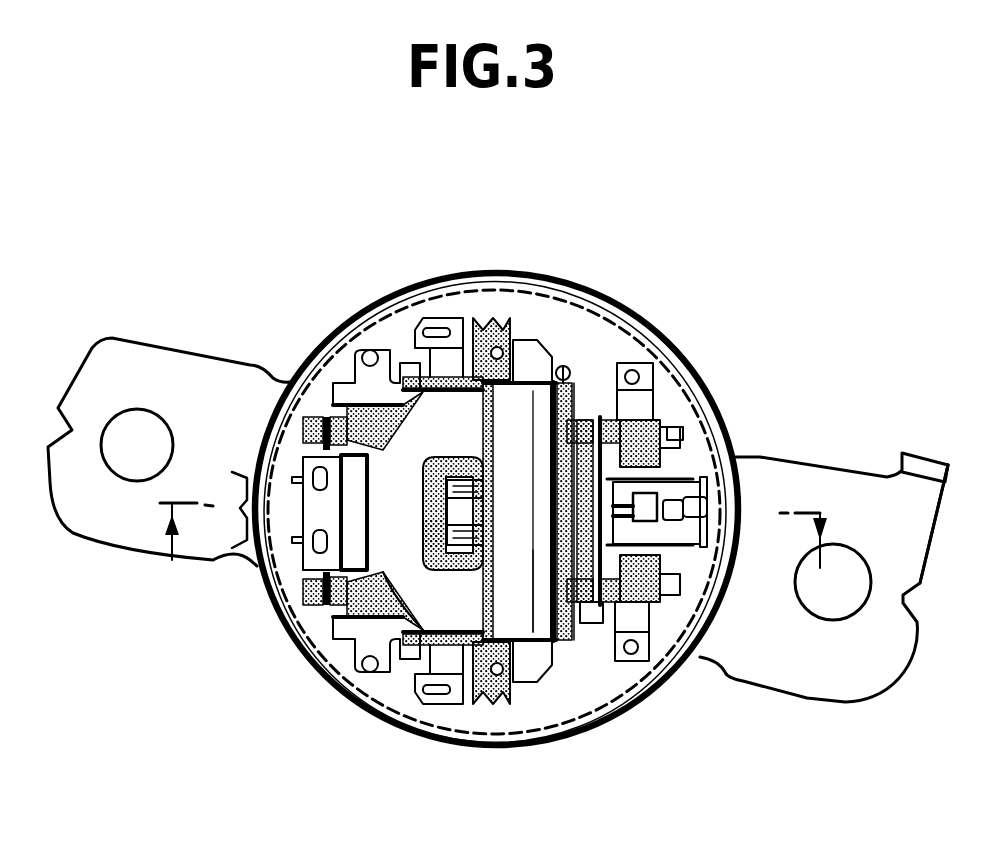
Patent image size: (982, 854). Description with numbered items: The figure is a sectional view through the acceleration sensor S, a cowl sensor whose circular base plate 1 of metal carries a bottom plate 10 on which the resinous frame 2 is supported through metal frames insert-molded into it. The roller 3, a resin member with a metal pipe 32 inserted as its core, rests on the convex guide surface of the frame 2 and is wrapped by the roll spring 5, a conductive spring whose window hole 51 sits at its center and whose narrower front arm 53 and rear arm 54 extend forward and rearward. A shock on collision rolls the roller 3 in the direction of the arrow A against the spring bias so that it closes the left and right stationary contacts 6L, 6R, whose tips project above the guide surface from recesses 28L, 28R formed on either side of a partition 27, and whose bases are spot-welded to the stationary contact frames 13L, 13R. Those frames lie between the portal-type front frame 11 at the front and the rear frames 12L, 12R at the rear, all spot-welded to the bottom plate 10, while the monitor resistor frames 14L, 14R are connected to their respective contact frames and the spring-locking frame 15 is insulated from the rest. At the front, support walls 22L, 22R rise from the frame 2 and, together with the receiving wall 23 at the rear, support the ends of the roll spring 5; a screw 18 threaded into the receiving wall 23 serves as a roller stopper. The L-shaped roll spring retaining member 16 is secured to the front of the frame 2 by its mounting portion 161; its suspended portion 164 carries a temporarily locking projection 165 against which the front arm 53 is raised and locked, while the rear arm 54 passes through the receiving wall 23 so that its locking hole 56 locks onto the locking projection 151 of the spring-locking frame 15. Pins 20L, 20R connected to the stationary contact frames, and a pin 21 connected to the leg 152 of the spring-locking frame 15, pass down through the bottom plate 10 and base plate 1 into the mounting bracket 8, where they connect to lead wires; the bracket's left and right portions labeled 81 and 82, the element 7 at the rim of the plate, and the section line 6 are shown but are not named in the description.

The circular base plate 1 is at (473, 278).
The resinous frame 2 is at (553, 652).
The roller 3 is at (480, 411).
The roll spring 5 is at (408, 647).
The section line VI-VI 6 is at (513, 561).
The dashed ring / gasket 7 is at (600, 313).
The mounting bracket 8 is at (808, 452).
The left mounting arm 81 is at (202, 365).
The arm edge 82 is at (917, 543).
The bottom plate 10 is at (385, 333).
The front frame 11 is at (357, 674).
The right rear frame 12R is at (640, 377).
The left rear frame 12L is at (647, 657).
The right stationary contact frame 13R is at (528, 340).
The left stationary contact frame 13L is at (523, 684).
The right monitor resistor frame 14R is at (430, 320).
The left monitor resistor frame 14L is at (448, 706).
The spring-locking frame 15 is at (665, 440).
The locking projection 151 is at (700, 530).
The leg 152 is at (608, 367).
The roll spring retaining member 16 is at (290, 465).
The mounting portion 161 is at (250, 498).
The suspended portion 164 is at (363, 487).
The temporarily locking projection 165 is at (305, 553).
The screw 18 is at (695, 505).
The right pin 20R is at (510, 320).
The left pin 20L is at (478, 705).
The pin 21 is at (566, 370).
The right support wall 22R is at (312, 385).
The left support wall 22L is at (298, 622).
The receiving wall 23 is at (575, 625).
The partition 27 is at (480, 508).
The right recess 28R is at (445, 490).
The left recess 28L is at (480, 580).
The metal pipe 32 is at (480, 620).
The window hole 51 is at (423, 553).
The front arm 53 is at (338, 548).
The rear arm 54 is at (678, 462).
The locking hole 56 is at (720, 577).
The right stationary contact 6R is at (482, 482).
The left stationary contact 6L is at (482, 543).
The arrow A is at (436, 156).
The acceleration sensor S is at (690, 290).